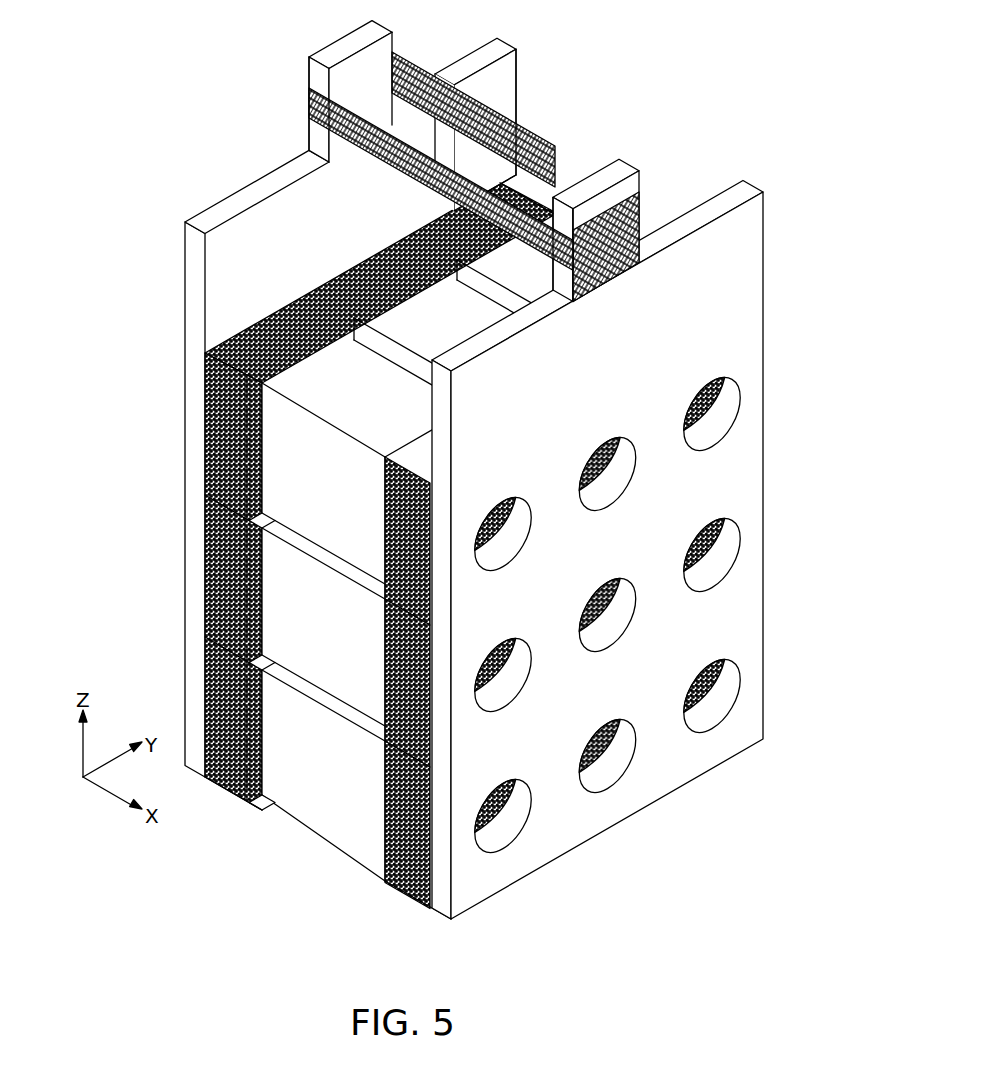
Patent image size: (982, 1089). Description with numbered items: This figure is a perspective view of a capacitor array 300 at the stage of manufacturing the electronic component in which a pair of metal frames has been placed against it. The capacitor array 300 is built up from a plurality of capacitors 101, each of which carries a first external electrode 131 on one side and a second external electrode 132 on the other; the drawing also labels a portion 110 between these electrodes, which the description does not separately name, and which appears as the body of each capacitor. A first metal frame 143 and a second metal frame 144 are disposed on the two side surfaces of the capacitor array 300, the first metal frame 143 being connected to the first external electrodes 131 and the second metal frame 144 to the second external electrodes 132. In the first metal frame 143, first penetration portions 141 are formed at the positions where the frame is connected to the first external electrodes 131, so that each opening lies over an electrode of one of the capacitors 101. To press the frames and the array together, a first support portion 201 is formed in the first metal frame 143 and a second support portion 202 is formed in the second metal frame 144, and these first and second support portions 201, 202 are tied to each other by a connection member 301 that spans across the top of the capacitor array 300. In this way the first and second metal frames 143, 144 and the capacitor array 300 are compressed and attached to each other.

The capacitor array 300 is at (201, 31).
The capacitor 101 is at (358, 565).
The battery cell 110 is at (317, 793).
The first external electrode 131 is at (374, 668).
The second external electrode 132 is at (232, 778).
The first penetration portion 141 is at (500, 818).
The first metal frame 143 is at (597, 553).
The second metal frame 144 is at (193, 519).
The first support portion 201 is at (628, 188).
The second support portion 202 is at (320, 68).
The connection member 301 is at (518, 132).